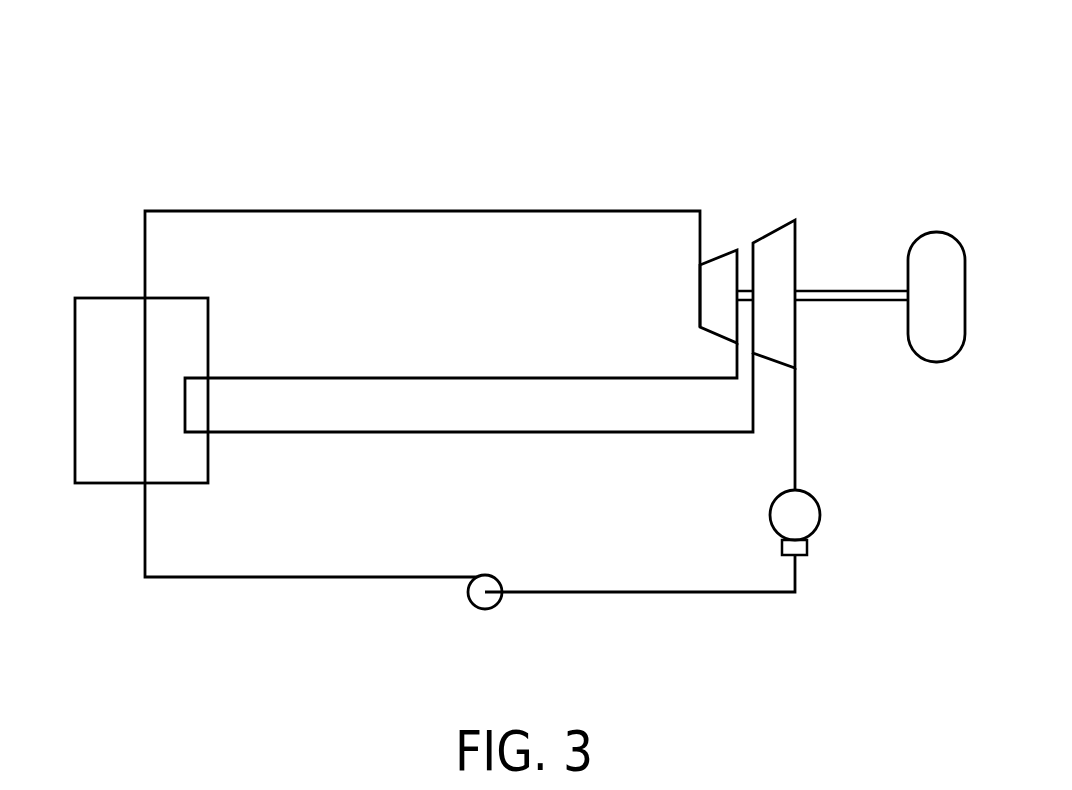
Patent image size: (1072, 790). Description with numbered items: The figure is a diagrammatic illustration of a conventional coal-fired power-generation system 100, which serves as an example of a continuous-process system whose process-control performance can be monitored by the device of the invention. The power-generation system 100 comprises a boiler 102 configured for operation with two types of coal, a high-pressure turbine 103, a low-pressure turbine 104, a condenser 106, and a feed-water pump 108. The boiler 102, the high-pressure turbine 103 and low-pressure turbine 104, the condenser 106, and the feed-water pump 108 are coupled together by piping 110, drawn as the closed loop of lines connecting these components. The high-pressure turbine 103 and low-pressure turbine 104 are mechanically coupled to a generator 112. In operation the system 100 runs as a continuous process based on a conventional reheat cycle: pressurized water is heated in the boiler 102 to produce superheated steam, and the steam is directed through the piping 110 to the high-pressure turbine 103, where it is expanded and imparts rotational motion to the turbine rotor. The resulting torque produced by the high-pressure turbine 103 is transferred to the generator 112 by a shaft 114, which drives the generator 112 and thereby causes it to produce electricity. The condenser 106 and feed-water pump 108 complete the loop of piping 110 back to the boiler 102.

The power-generation system 100 is at (785, 68).
The boiler 102 is at (108, 298).
The high-pressure turbine 103 is at (718, 257).
The low-pressure turbine 104 is at (775, 222).
The condenser 106 is at (820, 508).
The feed-water pump 108 is at (500, 577).
The piping 110 is at (433, 210).
The generator 112 is at (957, 237).
The shaft 114 is at (843, 302).